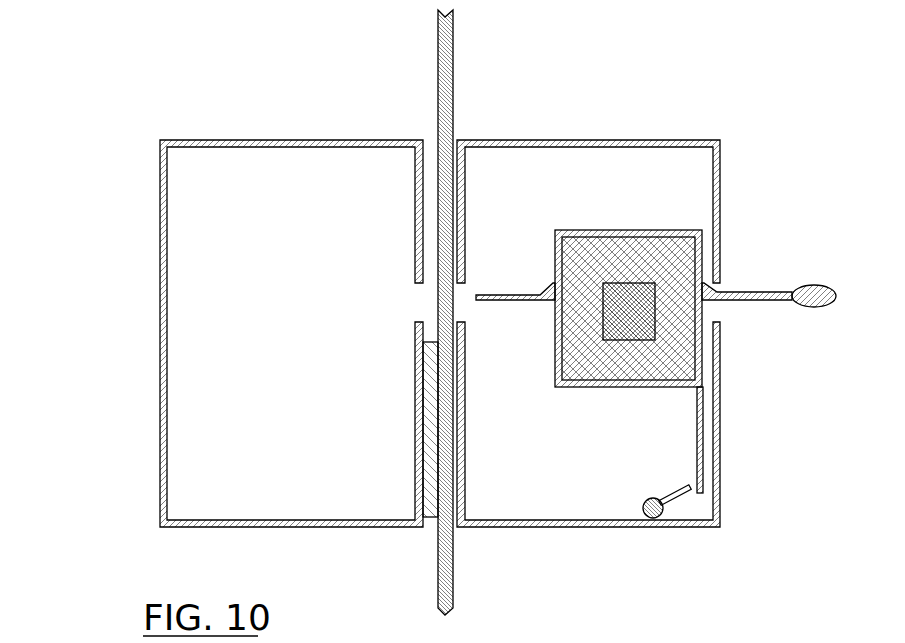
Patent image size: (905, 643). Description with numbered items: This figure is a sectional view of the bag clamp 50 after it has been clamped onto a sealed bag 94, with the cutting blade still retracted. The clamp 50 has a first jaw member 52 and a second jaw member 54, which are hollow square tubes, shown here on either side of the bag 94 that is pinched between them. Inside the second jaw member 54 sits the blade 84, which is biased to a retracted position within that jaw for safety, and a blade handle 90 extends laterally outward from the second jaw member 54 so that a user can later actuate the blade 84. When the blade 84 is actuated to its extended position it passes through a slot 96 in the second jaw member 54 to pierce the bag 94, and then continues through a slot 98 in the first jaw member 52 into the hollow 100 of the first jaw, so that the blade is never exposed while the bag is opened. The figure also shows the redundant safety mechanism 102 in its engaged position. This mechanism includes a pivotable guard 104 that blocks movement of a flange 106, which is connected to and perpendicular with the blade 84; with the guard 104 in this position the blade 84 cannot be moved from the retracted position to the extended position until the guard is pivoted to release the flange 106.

The bag clamp 50 is at (88, 180).
The first jaw member 52 is at (160, 355).
The second jaw member 54 is at (720, 448).
The blade 84 is at (512, 297).
The blade handle 90 is at (812, 284).
The sealed bag 94 is at (453, 48).
The slot in second jaw 96 is at (462, 311).
The slot in first jaw 98 is at (428, 311).
The hollow of first jaw 100 is at (281, 287).
The redundant safety mechanism 102 is at (708, 548).
The pivotable guard 104 is at (688, 497).
The flange 106 is at (700, 428).